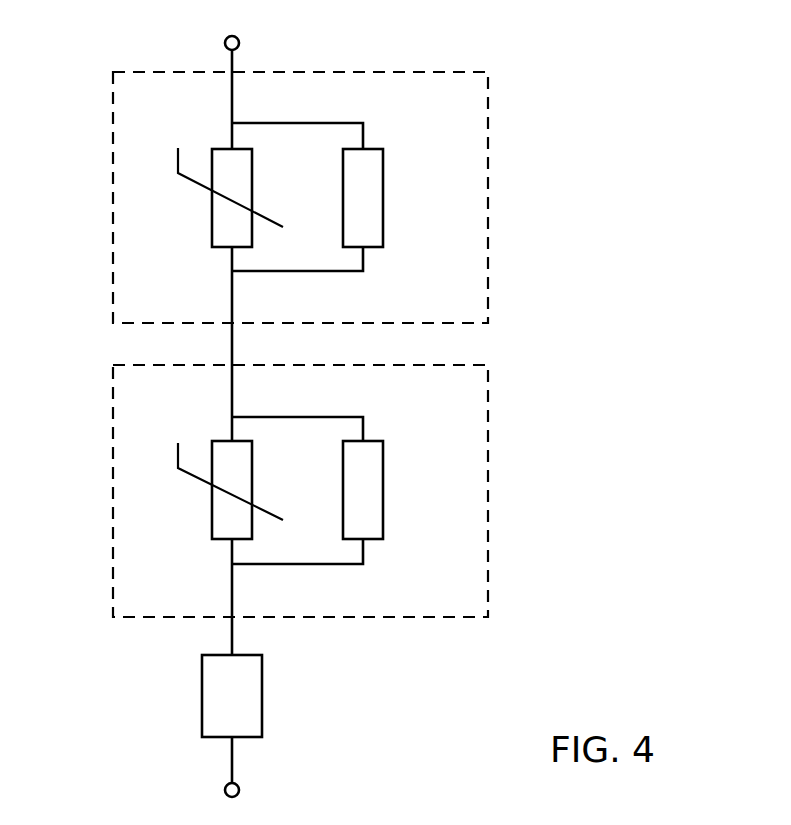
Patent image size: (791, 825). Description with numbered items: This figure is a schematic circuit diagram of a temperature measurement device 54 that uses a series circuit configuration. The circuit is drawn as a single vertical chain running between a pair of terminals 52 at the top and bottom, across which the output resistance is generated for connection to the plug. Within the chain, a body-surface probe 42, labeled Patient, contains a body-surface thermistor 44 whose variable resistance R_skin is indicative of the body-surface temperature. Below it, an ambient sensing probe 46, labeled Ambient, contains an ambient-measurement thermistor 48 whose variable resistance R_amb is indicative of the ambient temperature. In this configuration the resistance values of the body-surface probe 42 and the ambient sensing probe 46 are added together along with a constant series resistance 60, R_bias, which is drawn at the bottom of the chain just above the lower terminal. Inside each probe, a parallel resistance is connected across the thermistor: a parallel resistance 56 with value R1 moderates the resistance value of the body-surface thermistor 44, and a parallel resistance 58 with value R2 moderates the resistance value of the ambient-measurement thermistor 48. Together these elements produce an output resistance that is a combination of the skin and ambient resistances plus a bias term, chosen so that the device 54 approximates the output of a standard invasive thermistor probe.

The body-surface probe 42 is at (112, 210).
The body-surface thermistor 44 is at (212, 230).
The ambient sensing probe 46 is at (112, 496).
The ambient-measurement thermistor 48 is at (212, 515).
The terminals 52 is at (222, 42).
The temperature measurement device 54 is at (577, 115).
The parallel resistance 56 is at (384, 198).
The parallel resistance 58 is at (384, 493).
The constant series resistance 60 is at (263, 696).